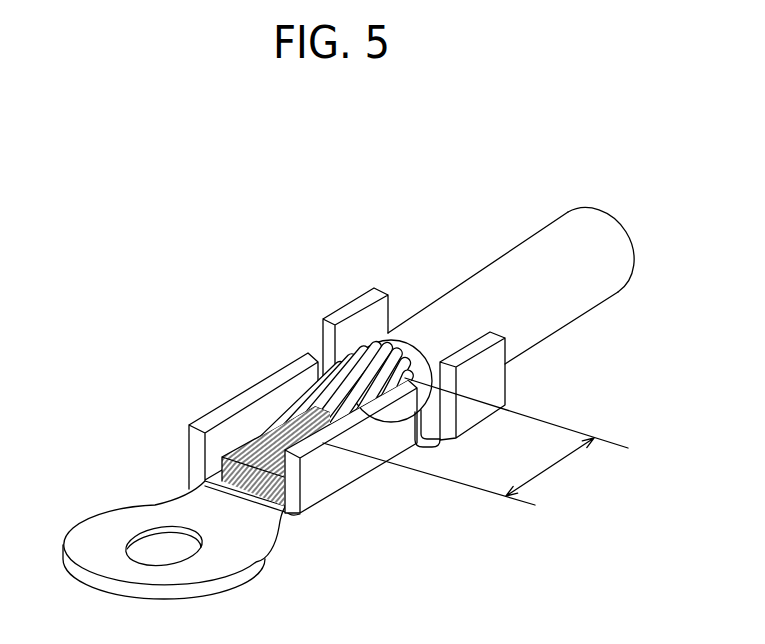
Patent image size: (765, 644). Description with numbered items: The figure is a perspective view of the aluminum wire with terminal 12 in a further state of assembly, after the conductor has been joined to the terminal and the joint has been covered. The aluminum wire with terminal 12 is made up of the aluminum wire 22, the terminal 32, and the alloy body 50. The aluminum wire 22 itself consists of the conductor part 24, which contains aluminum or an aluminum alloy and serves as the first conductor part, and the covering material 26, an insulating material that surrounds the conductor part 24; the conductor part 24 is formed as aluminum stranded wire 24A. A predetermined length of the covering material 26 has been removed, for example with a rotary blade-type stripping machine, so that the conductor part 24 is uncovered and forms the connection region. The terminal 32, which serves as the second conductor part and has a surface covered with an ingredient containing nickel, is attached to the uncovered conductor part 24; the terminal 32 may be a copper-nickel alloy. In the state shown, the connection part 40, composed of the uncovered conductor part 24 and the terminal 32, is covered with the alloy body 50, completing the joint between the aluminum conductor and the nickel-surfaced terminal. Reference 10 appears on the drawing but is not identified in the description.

The covered electric wire 10 is at (633, 187).
The aluminum wire with terminal 12 is at (398, 223).
The aluminum wire 22 is at (575, 238).
The conductor part 24 is at (346, 372).
The stranded wire 24A is at (308, 395).
The covering material 26 is at (607, 267).
The terminal 32 is at (220, 417).
The connection part 40 is at (475, 441).
The alloy body 50 is at (285, 505).